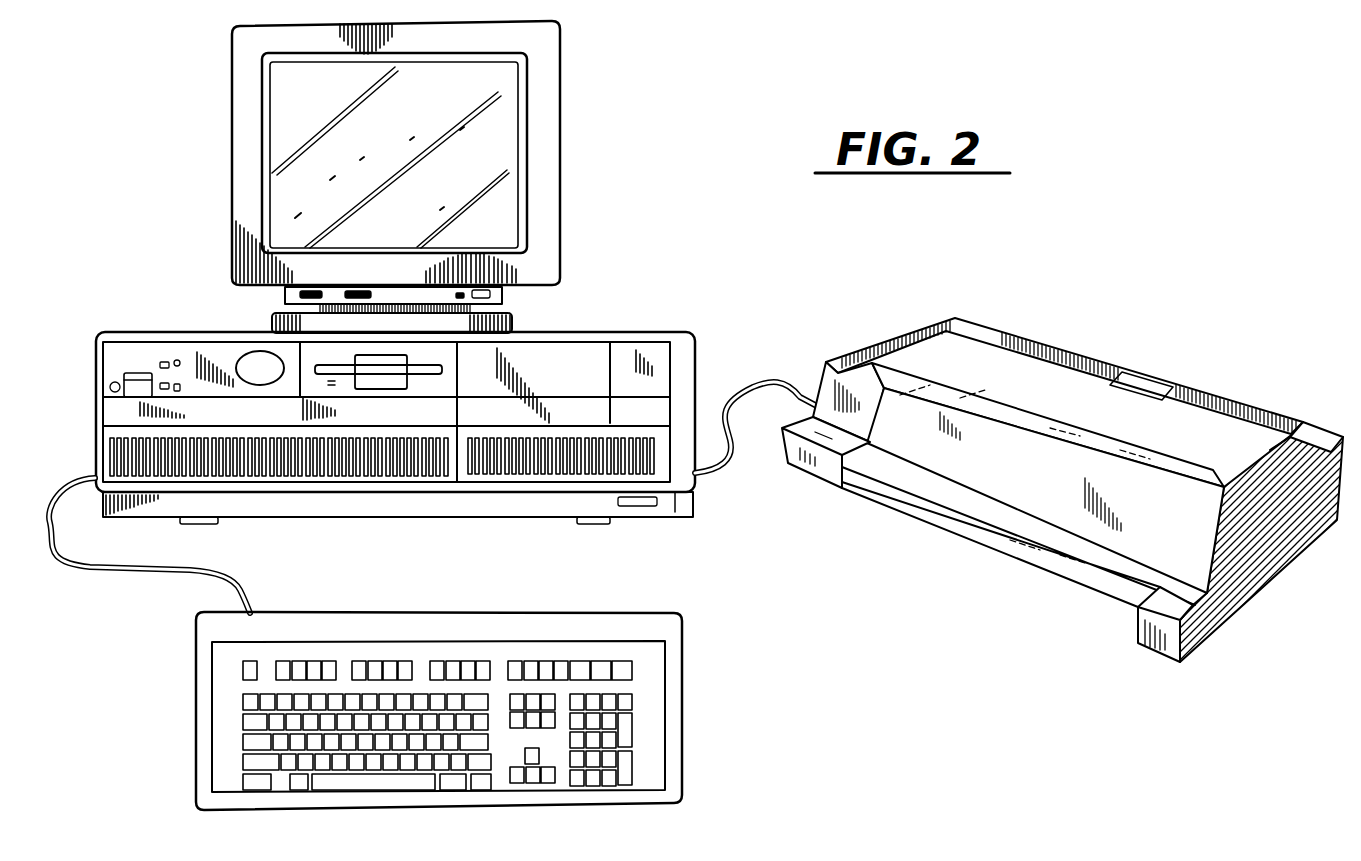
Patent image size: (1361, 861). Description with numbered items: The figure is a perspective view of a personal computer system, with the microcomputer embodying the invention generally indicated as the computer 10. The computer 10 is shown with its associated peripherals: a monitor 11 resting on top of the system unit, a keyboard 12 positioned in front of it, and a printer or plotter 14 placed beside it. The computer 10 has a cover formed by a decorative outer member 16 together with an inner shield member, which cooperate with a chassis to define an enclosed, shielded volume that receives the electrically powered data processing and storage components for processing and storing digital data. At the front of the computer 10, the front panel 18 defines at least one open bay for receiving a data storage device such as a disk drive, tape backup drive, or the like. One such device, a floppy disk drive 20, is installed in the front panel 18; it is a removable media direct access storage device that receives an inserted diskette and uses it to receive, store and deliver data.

The microcomputer 10 is at (434, 369).
The monitor 11 is at (562, 191).
The keyboard 12 is at (450, 612).
The printer or plotter 14 is at (896, 334).
The decorative outer member 16 is at (658, 326).
The front panel 18 is at (680, 363).
The floppy disk drive 20 is at (310, 357).